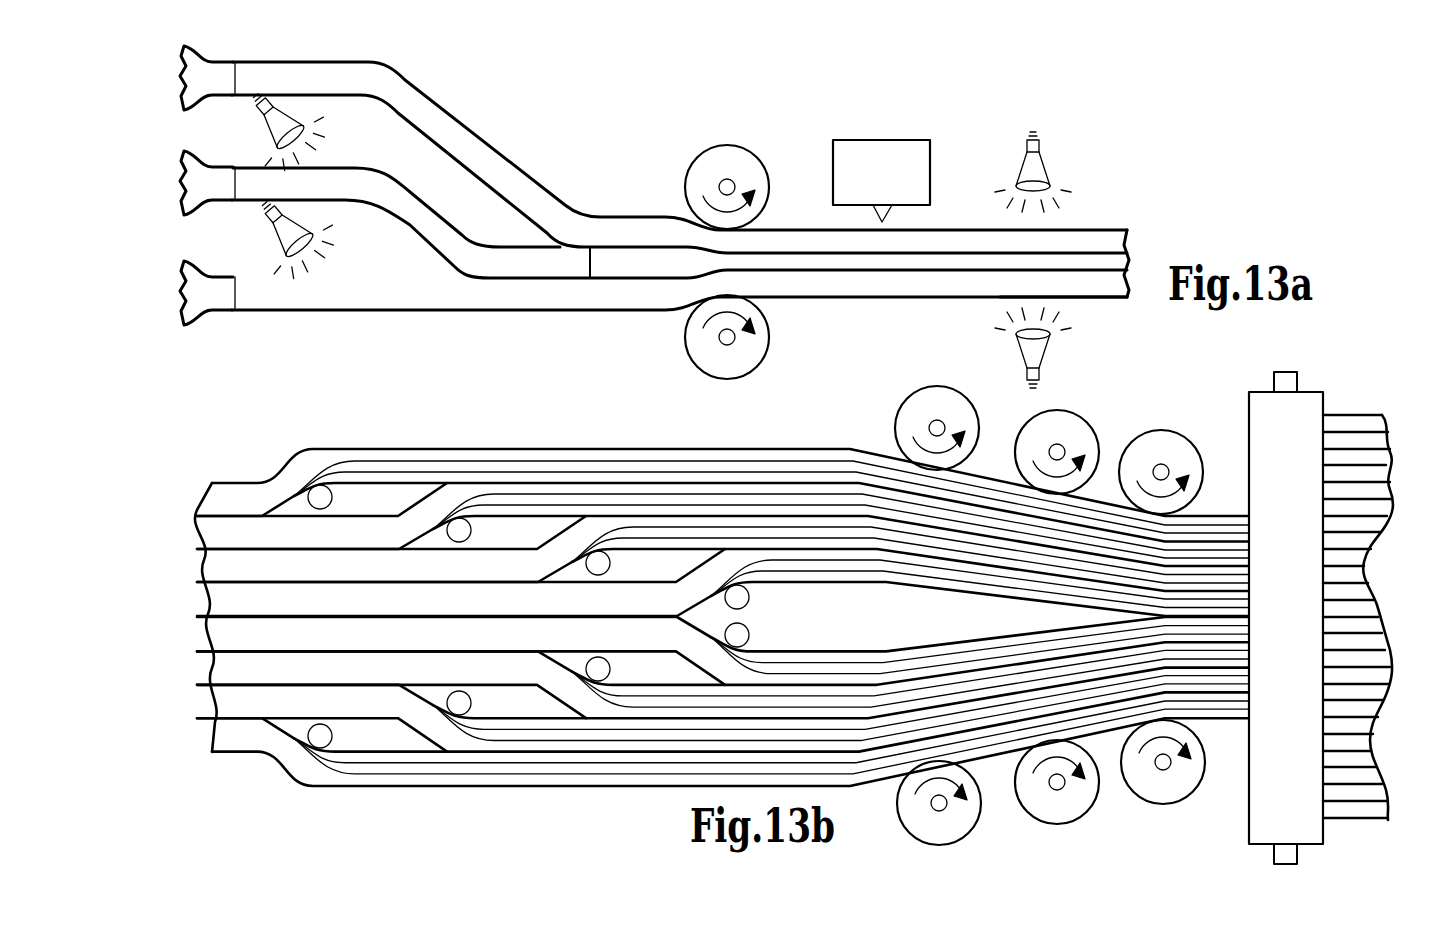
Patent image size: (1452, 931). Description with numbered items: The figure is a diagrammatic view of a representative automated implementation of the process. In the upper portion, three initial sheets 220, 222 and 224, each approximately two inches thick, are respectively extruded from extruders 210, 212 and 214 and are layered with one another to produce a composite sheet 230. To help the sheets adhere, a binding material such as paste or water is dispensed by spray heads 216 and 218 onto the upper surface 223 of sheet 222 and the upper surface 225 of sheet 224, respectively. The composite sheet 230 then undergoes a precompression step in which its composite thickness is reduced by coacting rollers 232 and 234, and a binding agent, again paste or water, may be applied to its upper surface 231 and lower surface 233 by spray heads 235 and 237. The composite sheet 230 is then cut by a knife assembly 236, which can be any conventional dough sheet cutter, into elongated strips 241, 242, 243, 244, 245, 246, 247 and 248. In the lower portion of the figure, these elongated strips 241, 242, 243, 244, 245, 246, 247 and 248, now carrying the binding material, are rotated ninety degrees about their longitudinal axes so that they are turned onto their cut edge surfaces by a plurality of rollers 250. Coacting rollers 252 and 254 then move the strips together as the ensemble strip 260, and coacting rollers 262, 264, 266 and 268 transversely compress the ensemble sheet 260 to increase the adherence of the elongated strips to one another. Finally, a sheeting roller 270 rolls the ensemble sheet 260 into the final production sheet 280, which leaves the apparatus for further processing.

In FIG. 13A, the extruder 210 is at (236, 60).
In FIG. 13A, the extruder 212 is at (198, 160).
In FIG. 13A, the extruder 214 is at (200, 268).
In FIG. 13A, the spray head 216 is at (298, 135).
In FIG. 13A, the spray head 218 is at (300, 248).
In FIG. 13A, the initial sheet 220 is at (472, 150).
In FIG. 13A, the initial sheet 222 is at (340, 182).
In FIG. 13A, the upper surface 223 is at (440, 213).
In FIG. 13A, the initial sheet 224 is at (325, 295).
In FIG. 13A, the upper surface 225 is at (362, 274).
In FIG. 13A, the composite sheet 230 is at (642, 178).
In FIG. 13A, the upper surface 231 is at (1092, 228).
In FIG. 13A, the coacting roller 232 is at (735, 155).
In FIG. 13A, the lower surface 233 is at (1103, 300).
In FIG. 13A, the coacting roller 234 is at (712, 353).
In FIG. 13A, the spray head 235 is at (1042, 172).
In FIG. 13A, the knife assembly 236 is at (886, 150).
In FIG. 13A, the spray head 237 is at (1042, 348).
In FIG. 13B, the elongated strip 241 is at (235, 490).
In FIG. 13B, the elongated strip 242 is at (245, 536).
In FIG. 13B, the elongated strip 243 is at (250, 569).
In FIG. 13B, the elongated strip 244 is at (255, 602).
In FIG. 13B, the elongated strip 245 is at (258, 638).
In FIG. 13B, the elongated strip 246 is at (250, 670).
In FIG. 13B, the elongated strip 247 is at (248, 702).
In FIG. 13B, the elongated strip 248 is at (245, 742).
In FIG. 13B, the roller 250 is at (323, 488).
In FIG. 13B, the coacting roller 252 is at (932, 417).
In FIG. 13B, the coacting roller 254 is at (942, 832).
In FIG. 13B, the ensemble strip 260 is at (1003, 484).
In FIG. 13B, the coacting roller 262 is at (1068, 437).
In FIG. 13B, the coacting roller 264 is at (1052, 812).
In FIG. 13B, the coacting roller 266 is at (1163, 452).
In FIG. 13B, the coacting roller 268 is at (1186, 785).
In FIG. 13B, the sheeting roller 270 is at (1300, 406).
In FIG. 13B, the final production sheet 280 is at (1355, 824).